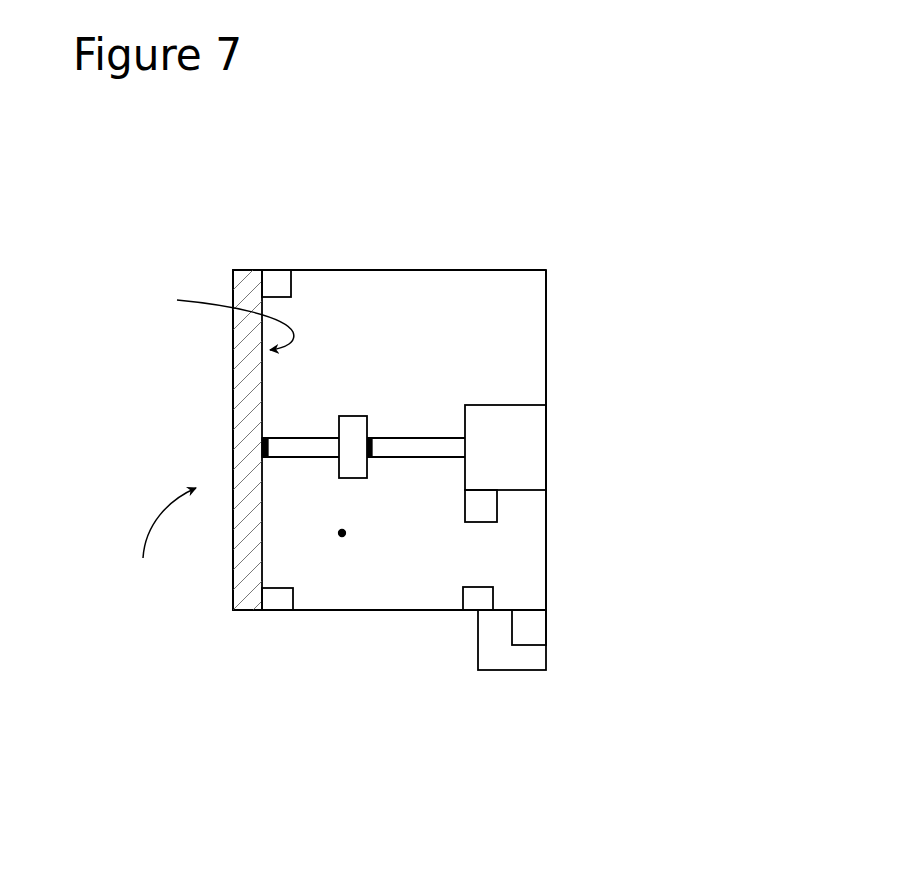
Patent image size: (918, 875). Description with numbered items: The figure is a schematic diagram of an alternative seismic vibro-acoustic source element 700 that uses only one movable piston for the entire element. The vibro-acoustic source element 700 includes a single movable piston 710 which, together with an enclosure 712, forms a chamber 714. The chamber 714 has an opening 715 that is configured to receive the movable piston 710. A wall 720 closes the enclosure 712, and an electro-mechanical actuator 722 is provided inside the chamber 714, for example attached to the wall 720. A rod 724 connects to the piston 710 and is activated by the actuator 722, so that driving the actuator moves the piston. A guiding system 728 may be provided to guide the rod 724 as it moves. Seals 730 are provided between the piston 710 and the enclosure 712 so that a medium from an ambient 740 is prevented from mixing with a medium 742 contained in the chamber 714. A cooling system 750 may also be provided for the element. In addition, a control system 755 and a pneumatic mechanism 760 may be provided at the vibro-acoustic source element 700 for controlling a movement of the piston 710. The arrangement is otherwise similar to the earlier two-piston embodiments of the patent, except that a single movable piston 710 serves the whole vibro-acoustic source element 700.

The vibro-acoustic source element 700 is at (463, 156).
The movable piston 710 is at (233, 362).
The enclosure 712 is at (351, 270).
The chamber 714 is at (331, 582).
The opening 715 is at (209, 318).
The wall 720 is at (547, 307).
The electro-mechanical actuator 722 is at (490, 422).
The rod 724 is at (402, 458).
The guiding system 728 is at (351, 423).
The seals 730 is at (274, 283).
The ambient 740 is at (159, 542).
The medium 742 is at (345, 536).
The cooling system 750 is at (472, 522).
The control system 755 is at (493, 660).
The pneumatic mechanism 760 is at (530, 630).